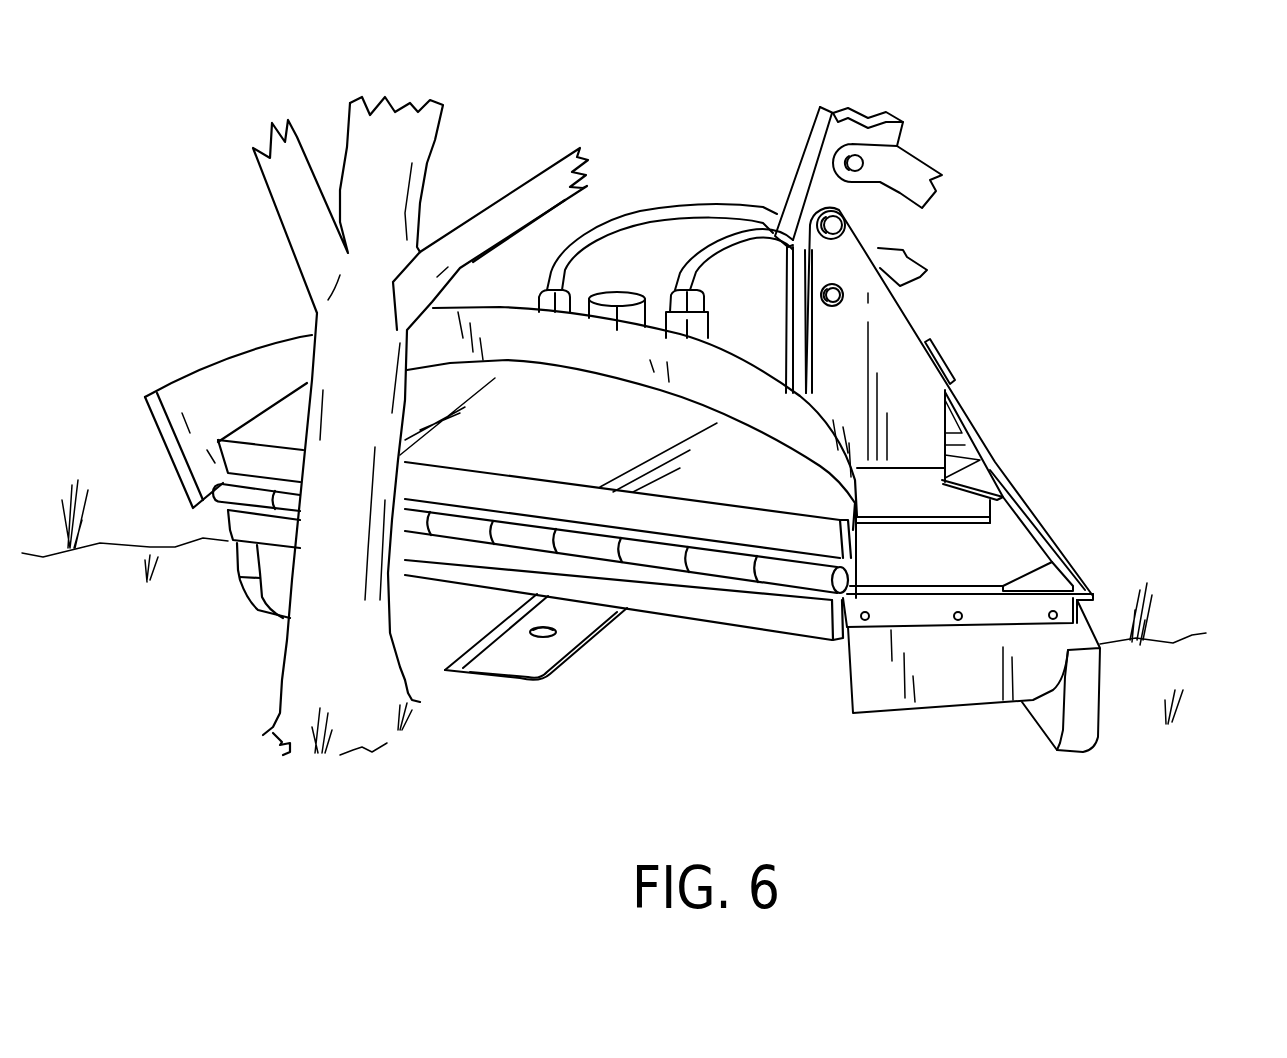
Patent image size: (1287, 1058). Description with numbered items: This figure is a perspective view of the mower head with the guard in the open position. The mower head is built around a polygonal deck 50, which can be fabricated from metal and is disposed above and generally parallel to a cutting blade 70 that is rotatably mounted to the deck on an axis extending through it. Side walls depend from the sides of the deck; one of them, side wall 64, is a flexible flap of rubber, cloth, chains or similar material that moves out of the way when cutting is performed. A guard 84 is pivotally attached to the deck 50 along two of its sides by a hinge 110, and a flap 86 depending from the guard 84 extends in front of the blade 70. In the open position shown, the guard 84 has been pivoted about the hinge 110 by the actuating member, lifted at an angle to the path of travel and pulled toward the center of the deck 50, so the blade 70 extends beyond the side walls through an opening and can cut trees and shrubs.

The deck 50 is at (965, 560).
The side wall 64 is at (942, 695).
The cutting blade 70 is at (540, 655).
The guard 84 is at (690, 474).
The flap 86 is at (530, 332).
The hinge 110 is at (648, 550).